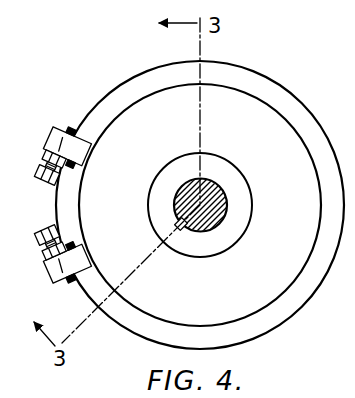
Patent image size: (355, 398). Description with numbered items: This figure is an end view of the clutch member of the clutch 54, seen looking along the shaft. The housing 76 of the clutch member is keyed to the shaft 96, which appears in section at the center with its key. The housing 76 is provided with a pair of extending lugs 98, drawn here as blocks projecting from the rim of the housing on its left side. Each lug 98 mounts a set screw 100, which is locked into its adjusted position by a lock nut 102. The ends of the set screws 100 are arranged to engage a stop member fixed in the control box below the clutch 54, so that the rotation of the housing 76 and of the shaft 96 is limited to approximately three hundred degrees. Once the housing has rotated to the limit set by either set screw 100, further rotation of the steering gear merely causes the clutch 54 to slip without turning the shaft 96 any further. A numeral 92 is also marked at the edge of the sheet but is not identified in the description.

The clutch 54 is at (259, 59).
The housing 76 is at (287, 192).
The shaft 96 is at (210, 212).
The extending lugs 98 is at (64, 131).
The set screw 100 is at (44, 225).
The lock nut 102 is at (44, 151).
The support member 92 is at (283, 390).